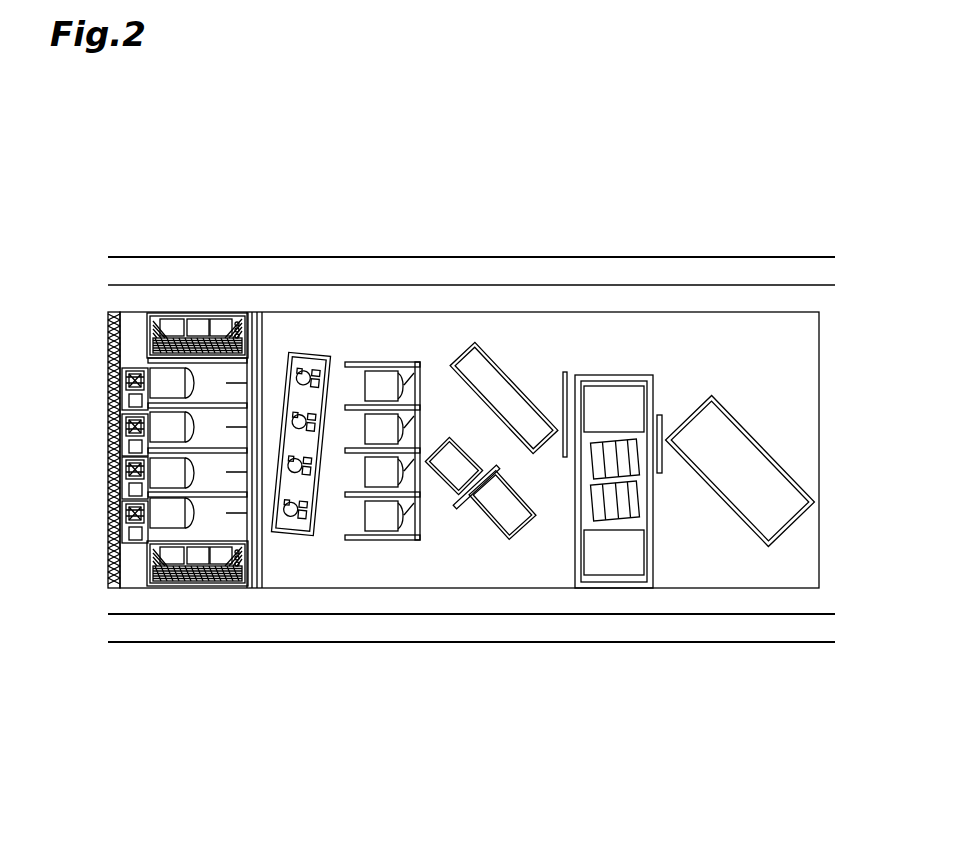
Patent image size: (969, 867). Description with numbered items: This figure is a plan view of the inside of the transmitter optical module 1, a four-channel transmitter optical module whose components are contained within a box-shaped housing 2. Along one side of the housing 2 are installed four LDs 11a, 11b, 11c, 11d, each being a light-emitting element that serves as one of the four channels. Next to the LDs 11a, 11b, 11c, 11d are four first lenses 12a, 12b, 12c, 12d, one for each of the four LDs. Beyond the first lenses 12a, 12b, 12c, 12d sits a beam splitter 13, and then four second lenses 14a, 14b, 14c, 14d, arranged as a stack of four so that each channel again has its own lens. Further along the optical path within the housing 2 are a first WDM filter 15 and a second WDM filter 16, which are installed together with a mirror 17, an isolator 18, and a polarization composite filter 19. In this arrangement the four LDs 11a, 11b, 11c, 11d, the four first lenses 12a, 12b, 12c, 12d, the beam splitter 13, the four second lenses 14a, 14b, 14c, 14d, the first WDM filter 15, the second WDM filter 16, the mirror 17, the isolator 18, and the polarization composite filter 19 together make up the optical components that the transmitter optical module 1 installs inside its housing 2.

The transmitter optical module 1 is at (656, 141).
The housing 2 is at (713, 270).
The LD (light-emitting element) 11a is at (122, 389).
The LD (light-emitting element) 11b is at (122, 435).
The LD (light-emitting element) 11c is at (122, 478).
The LD (light-emitting element) 11d is at (122, 520).
The first lens 12a is at (209, 336).
The first lens 12b is at (218, 397).
The first lens 12c is at (196, 478).
The first lens 12d is at (212, 555).
The beam splitter 13 is at (312, 340).
The second lens 14a is at (413, 361).
The second lens 14b is at (422, 410).
The second lens 14c is at (448, 491).
The second lens 14d is at (410, 540).
The first WDM filter 15 is at (452, 468).
The second WDM filter 16 is at (507, 515).
The mirror 17 is at (492, 385).
The isolator 18 is at (610, 403).
The polarization composite filter 19 is at (737, 482).